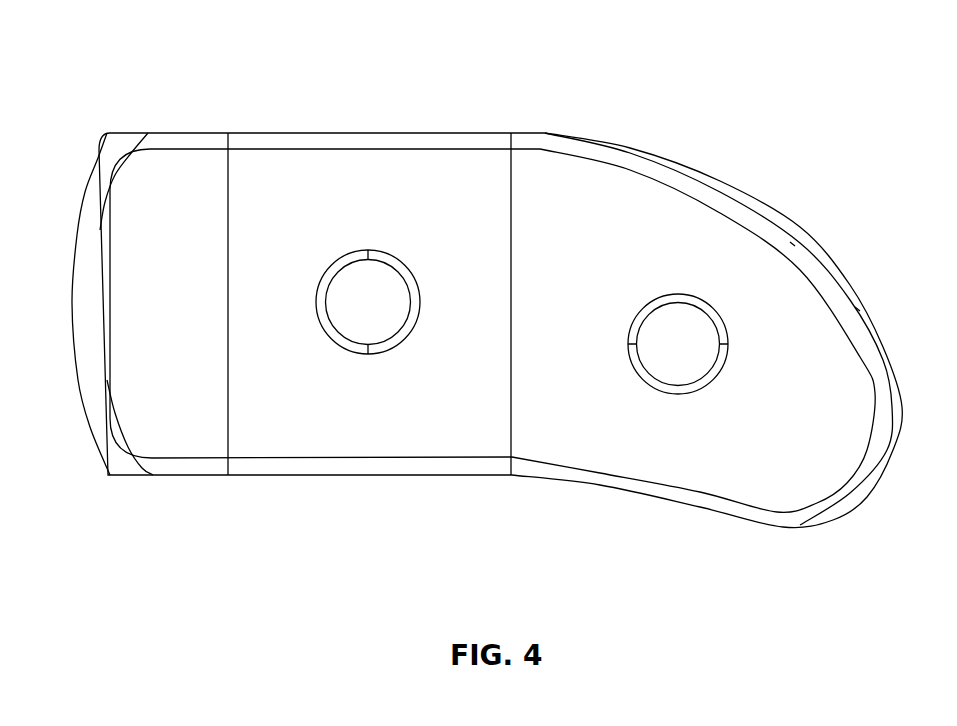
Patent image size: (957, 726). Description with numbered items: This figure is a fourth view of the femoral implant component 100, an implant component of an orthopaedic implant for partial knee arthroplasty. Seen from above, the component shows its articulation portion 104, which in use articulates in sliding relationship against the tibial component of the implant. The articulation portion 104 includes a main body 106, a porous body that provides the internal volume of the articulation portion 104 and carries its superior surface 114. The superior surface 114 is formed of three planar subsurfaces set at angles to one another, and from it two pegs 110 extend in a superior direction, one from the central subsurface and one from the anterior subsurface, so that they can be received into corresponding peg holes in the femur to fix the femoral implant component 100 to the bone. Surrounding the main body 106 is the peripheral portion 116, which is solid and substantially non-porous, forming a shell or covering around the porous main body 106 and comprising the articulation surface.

The femoral implant component 100 is at (461, 327).
The articulation portion 104 is at (538, 508).
The main body 106 is at (345, 425).
The pegs 110 is at (678, 342).
The superior surface 114 is at (317, 395).
The peripheral portion 116 is at (260, 470).